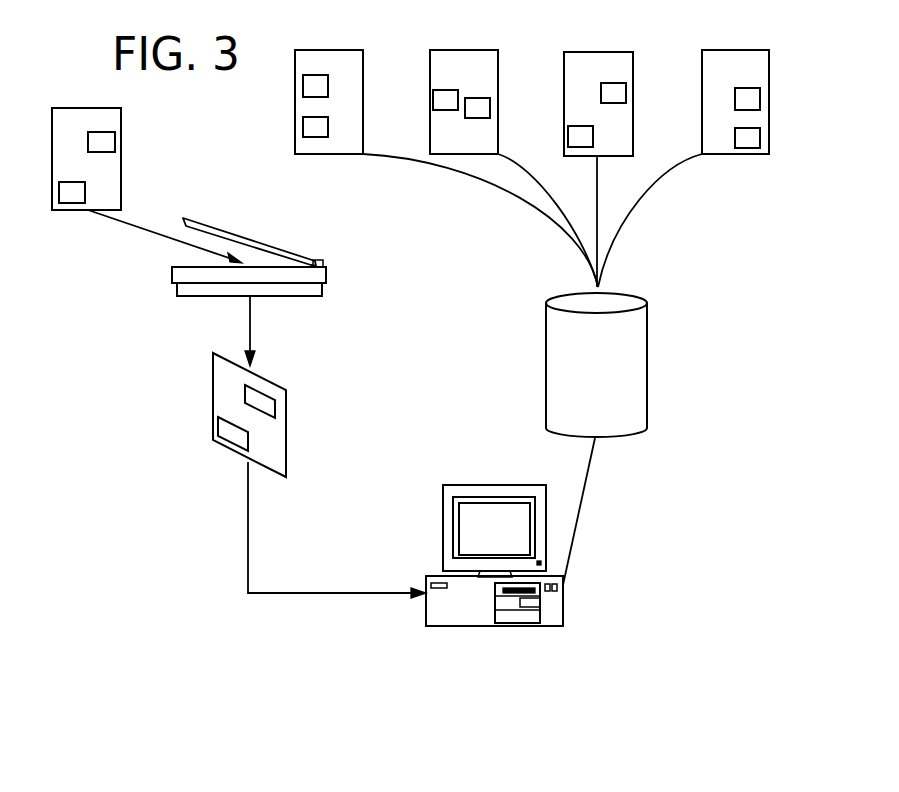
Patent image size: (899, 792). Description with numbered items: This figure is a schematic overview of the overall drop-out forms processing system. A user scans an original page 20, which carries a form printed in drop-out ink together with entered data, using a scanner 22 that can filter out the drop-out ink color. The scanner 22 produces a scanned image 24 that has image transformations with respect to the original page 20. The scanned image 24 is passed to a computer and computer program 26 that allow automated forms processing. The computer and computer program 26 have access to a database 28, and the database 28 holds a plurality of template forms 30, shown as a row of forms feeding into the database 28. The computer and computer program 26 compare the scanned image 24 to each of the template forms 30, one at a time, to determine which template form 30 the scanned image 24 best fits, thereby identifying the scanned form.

The original page 20 is at (121, 170).
The scanner 22 is at (326, 276).
The scanned image 24 is at (286, 402).
The computer and computer program 26 is at (563, 612).
The database 28 is at (632, 378).
The template forms 30 is at (340, 62).